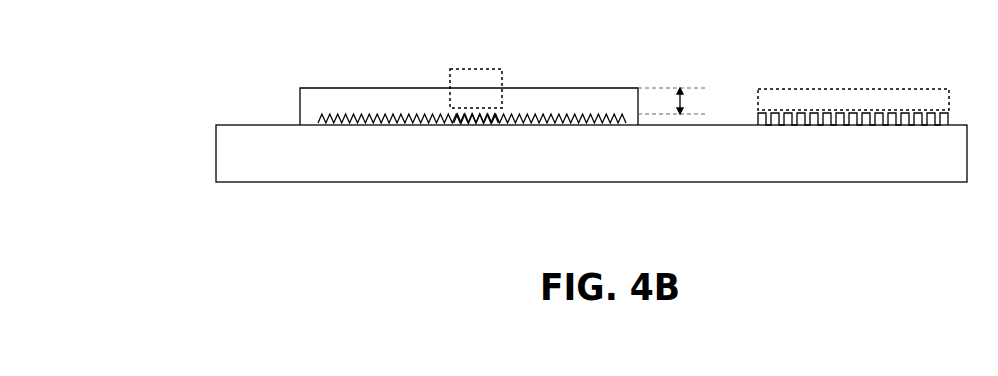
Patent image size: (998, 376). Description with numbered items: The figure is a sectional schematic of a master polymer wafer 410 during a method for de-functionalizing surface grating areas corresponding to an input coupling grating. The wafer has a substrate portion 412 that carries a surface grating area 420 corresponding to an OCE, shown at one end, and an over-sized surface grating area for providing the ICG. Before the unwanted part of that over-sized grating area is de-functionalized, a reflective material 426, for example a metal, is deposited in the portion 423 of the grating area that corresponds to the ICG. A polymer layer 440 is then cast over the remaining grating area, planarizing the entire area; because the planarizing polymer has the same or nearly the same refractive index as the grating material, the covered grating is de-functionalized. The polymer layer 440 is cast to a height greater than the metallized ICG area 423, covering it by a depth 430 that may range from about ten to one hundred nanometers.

The master polymer wafer 410 is at (536, 137).
The substrate portion 412 is at (591, 153).
The surface grating area 420 is at (815, 89).
The portion of grating area corresponding to the ICG 423 is at (477, 69).
The reflective material 426 is at (450, 115).
The depth 430 is at (680, 107).
The polymer layer 440 is at (469, 128).